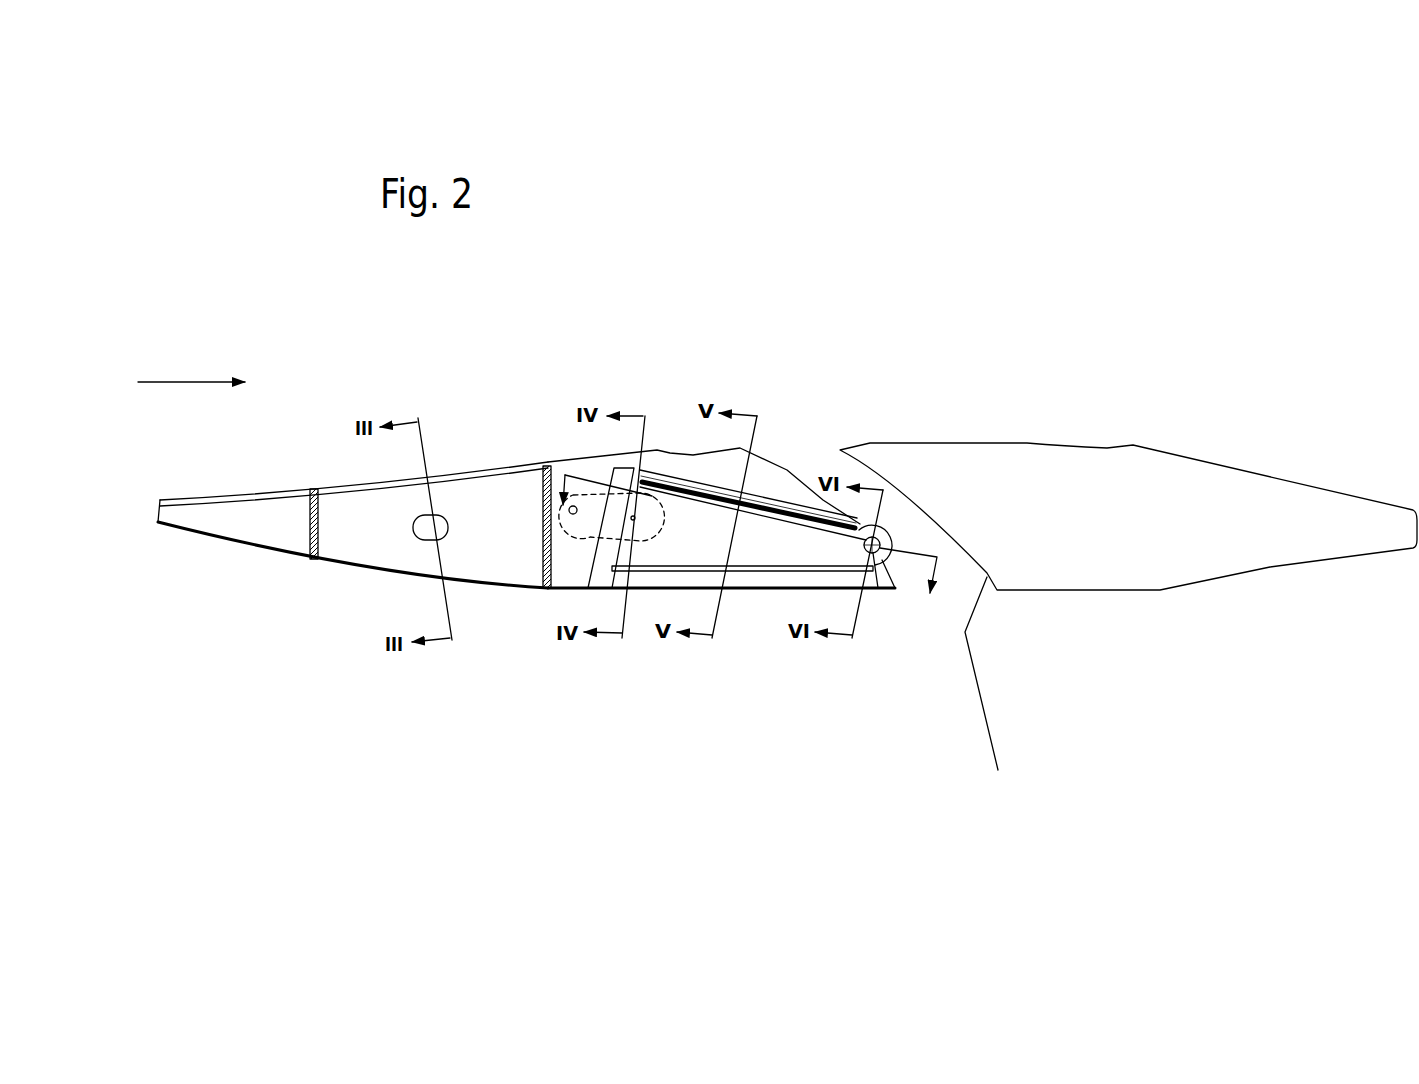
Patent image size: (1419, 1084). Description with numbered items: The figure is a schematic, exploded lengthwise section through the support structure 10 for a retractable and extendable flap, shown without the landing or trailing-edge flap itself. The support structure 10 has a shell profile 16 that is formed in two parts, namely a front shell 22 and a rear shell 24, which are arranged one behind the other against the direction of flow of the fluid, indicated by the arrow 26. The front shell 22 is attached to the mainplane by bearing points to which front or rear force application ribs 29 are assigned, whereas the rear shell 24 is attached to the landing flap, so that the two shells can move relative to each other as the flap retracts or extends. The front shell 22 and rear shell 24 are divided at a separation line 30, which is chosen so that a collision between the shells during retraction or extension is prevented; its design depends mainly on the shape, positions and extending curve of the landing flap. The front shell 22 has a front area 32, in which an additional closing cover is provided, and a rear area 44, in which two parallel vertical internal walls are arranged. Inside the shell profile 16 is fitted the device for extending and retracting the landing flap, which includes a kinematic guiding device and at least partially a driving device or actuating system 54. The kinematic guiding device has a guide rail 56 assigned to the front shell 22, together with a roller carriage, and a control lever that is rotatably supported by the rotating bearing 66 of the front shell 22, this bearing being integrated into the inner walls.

The support structure 10 is at (1130, 306).
The shell profile 16 is at (1064, 709).
The front shell 22 is at (343, 621).
The rear shell 24 is at (1249, 604).
The direction of flow of the fluid 26 is at (183, 381).
The force application ribs 29 is at (310, 530).
The separation line 30 is at (989, 690).
The front area 32 is at (370, 556).
The rear area 44 is at (764, 536).
The actuating system 54 is at (572, 680).
The guide rail 56 is at (797, 510).
The rotating bearing 66 is at (875, 552).